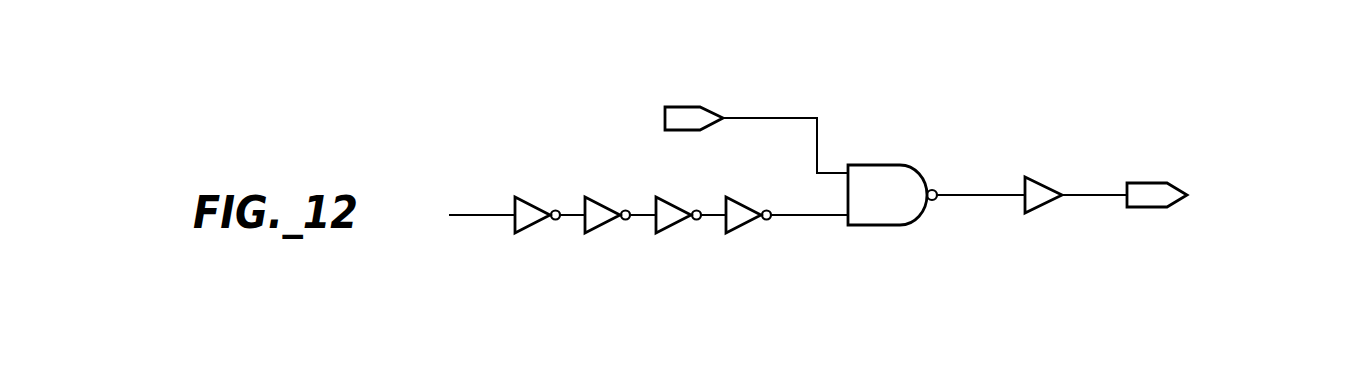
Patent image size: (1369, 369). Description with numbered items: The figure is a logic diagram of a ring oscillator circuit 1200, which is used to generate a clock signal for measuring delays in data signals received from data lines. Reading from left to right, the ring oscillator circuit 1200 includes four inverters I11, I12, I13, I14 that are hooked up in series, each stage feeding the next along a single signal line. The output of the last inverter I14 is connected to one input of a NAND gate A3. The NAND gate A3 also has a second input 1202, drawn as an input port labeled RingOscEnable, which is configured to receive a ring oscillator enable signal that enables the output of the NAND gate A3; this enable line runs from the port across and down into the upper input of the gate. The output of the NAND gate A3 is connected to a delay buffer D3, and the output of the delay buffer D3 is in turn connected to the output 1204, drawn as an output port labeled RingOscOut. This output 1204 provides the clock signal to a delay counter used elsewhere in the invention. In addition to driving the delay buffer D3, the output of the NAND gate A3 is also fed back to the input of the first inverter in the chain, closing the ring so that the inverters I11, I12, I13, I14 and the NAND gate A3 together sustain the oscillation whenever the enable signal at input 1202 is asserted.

The ring oscillator circuit 1200 is at (1078, 81).
The input 1202 is at (705, 109).
The output 1204 is at (1167, 182).
The inverter I11 is at (532, 199).
The inverter I12 is at (602, 199).
The inverter I13 is at (673, 199).
The inverter I14 is at (743, 199).
The NAND gate A3 is at (892, 195).
The delay buffer D3 is at (1043, 182).